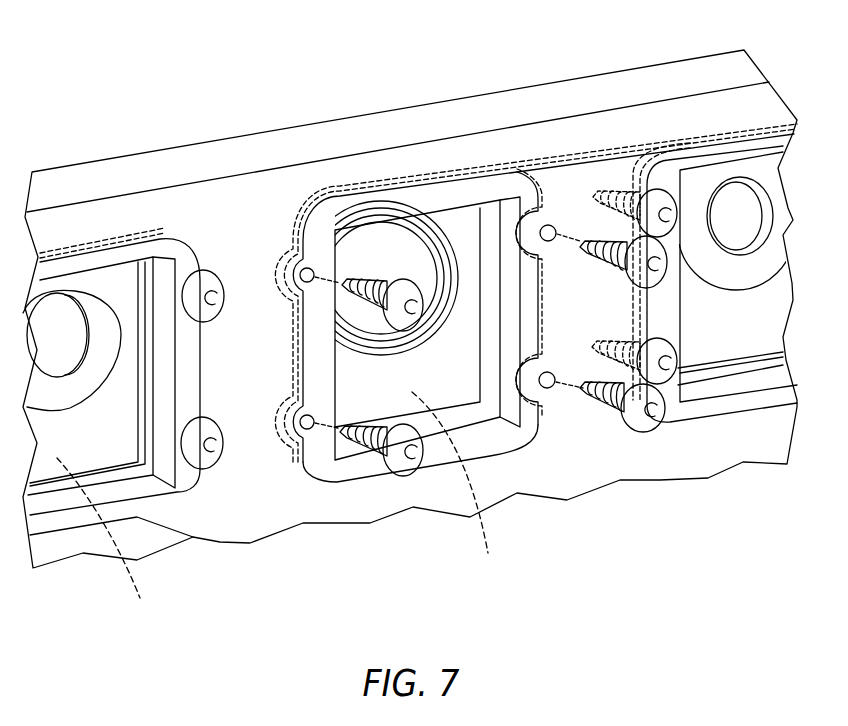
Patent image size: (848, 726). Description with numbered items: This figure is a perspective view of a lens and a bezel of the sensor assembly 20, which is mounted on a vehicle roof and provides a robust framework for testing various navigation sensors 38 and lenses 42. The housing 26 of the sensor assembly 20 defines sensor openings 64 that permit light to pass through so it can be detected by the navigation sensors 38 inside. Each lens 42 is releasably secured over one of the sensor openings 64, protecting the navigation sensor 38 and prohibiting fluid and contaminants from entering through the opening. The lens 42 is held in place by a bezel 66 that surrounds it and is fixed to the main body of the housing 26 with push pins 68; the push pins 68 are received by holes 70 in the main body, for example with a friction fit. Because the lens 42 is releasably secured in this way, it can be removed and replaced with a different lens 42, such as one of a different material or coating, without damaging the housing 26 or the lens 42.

The sensor assembly 20 is at (95, 84).
The housing 26 is at (568, 138).
The navigation sensor 38 is at (77, 360).
The lens 42 is at (87, 442).
The sensor opening 64 is at (140, 598).
The bezel 66 is at (133, 257).
The push pin 68 is at (210, 268).
The hole 70 is at (301, 285).